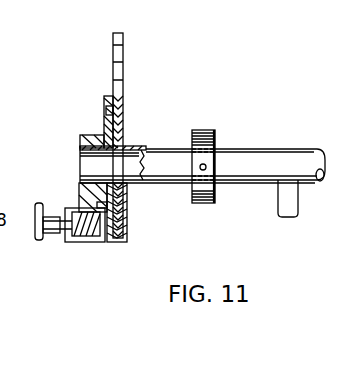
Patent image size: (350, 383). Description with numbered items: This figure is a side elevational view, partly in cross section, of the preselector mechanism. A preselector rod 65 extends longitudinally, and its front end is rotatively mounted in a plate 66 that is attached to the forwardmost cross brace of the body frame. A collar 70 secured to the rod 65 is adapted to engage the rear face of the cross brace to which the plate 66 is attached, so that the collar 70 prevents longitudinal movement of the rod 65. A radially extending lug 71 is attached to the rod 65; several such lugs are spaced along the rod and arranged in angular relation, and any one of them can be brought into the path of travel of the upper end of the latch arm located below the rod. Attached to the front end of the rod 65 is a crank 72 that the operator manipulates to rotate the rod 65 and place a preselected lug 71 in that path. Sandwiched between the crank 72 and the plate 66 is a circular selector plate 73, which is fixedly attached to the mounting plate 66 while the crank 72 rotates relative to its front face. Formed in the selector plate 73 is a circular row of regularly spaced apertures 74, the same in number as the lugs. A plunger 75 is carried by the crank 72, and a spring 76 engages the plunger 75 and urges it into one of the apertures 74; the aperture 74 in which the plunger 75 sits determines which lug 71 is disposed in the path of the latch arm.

The preselector rod 65 is at (265, 148).
The plate 66 is at (124, 129).
The collar 70 is at (203, 130).
The lug 71 is at (278, 209).
The crank 72 is at (80, 143).
The selector plate 73 is at (109, 96).
The aperture 74 is at (106, 110).
The plunger 75 is at (48, 238).
The spring 76 is at (90, 242).